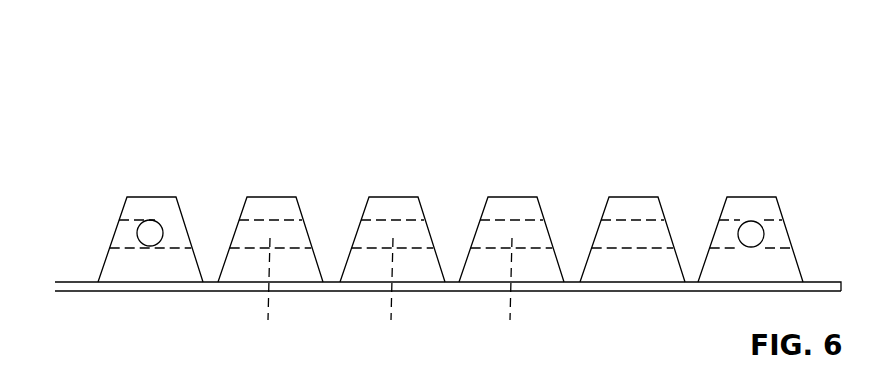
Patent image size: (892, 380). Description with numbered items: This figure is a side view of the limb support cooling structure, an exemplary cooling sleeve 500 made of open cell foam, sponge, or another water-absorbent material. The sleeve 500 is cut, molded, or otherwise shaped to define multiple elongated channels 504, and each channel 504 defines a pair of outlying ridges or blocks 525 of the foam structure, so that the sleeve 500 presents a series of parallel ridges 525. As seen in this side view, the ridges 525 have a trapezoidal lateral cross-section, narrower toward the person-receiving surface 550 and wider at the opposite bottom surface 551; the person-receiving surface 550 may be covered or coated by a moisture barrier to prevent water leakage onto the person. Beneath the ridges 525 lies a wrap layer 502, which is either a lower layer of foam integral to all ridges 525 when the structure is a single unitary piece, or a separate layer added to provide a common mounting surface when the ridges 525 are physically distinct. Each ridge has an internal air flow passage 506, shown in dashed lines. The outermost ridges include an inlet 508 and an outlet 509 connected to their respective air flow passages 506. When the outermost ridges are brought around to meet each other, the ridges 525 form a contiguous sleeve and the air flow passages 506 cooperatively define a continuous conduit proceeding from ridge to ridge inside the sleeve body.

The cooling sleeve 500 is at (265, 100).
The wrap layer 502 is at (183, 291).
The elongated channel 504 is at (213, 225).
The internal air flow passage 506 is at (391, 293).
The inlet 508 is at (138, 225).
The outlet 509 is at (763, 227).
The ridge 525 is at (153, 196).
The person-receiving surface 550 is at (632, 196).
The bottom surface 551 is at (652, 291).